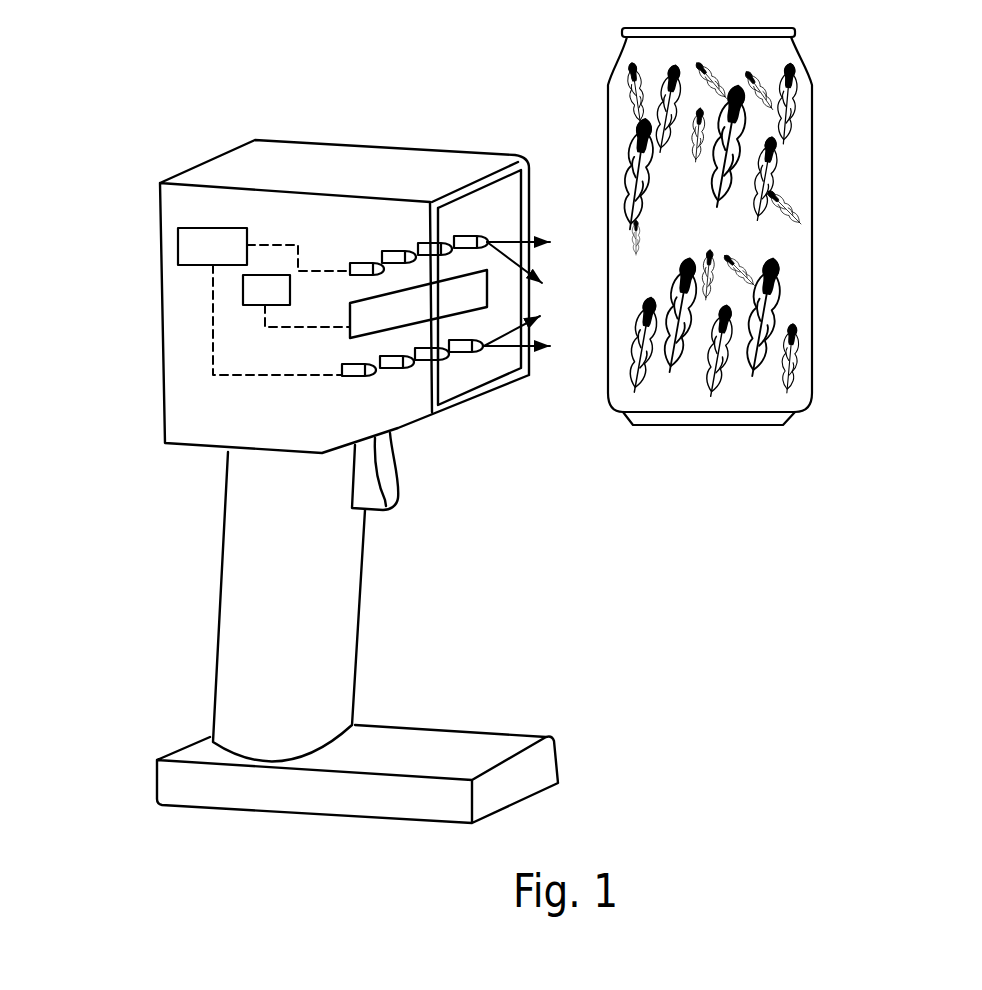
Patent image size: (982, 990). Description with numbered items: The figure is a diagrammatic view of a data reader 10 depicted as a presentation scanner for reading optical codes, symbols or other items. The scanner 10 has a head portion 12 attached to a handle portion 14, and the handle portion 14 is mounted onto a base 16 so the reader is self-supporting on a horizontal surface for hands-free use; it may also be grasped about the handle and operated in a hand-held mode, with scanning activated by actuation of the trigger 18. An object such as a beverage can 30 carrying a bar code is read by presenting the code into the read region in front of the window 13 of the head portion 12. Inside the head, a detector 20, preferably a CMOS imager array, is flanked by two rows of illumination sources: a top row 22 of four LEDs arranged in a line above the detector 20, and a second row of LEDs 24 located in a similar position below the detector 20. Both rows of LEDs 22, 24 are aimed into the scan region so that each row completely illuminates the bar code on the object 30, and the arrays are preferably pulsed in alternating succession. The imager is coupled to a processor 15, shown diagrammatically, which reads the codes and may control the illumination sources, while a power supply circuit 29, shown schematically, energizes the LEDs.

The data reader 10 is at (143, 142).
The head portion 12 is at (178, 303).
The window 13 is at (488, 363).
The handle portion 14 is at (240, 598).
The processor 15 is at (243, 290).
The base 16 is at (350, 802).
The trigger 18 is at (387, 497).
The detector 20 is at (373, 330).
The top row of illumination sources 22 is at (395, 249).
The second row of LEDs 24 is at (402, 368).
The power supply circuit 29 is at (178, 244).
The beverage can 30 is at (747, 390).